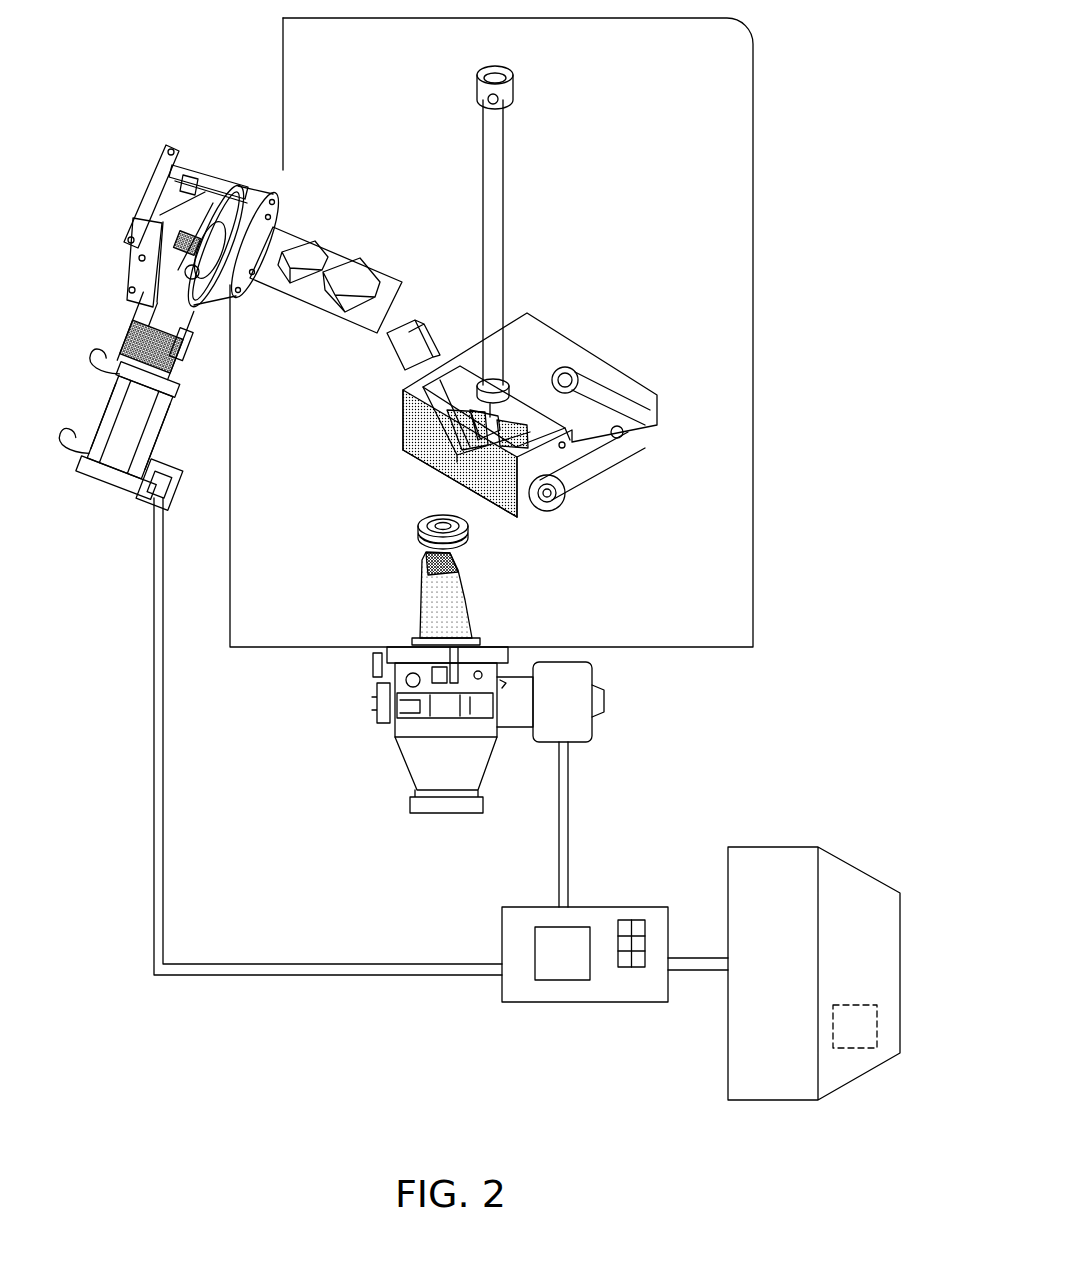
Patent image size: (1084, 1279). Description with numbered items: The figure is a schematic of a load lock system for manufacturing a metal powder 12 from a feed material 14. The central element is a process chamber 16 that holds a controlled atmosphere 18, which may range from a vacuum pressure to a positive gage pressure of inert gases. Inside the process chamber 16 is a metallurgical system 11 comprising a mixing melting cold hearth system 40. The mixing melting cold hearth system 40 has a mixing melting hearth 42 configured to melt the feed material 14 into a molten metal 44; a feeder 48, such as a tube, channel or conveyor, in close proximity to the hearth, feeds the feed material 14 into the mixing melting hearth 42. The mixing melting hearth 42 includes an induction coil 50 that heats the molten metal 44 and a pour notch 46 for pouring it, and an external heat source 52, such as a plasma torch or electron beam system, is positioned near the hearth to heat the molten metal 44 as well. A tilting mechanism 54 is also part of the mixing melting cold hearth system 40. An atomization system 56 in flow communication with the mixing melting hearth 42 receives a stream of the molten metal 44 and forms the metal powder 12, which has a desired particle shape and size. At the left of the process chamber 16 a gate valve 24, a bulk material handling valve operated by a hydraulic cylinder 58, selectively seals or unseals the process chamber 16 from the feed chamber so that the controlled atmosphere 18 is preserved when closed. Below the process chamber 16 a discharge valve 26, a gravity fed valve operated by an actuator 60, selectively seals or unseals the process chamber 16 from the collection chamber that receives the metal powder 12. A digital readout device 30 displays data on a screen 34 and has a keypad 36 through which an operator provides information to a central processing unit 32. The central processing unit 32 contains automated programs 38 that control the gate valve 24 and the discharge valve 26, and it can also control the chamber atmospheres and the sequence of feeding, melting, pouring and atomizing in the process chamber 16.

The metallurgical system 11 is at (352, 385).
The metal powder 12 is at (455, 596).
The feed material 14 is at (330, 245).
The process chamber 16 is at (753, 598).
The controlled atmosphere 18 is at (672, 216).
The gate valve 24 is at (168, 147).
The discharge valve 26 is at (403, 768).
The digital readout device 30 is at (585, 970).
The central processing unit (CPU) 32 is at (843, 999).
The screen 34 is at (553, 967).
The keypad 36 is at (625, 917).
The automated programs 38 is at (878, 1025).
The mixing melting cold hearth system 40 is at (516, 519).
The mixing melting hearth 42 is at (480, 445).
The molten metal 44 is at (565, 478).
The pour notch 46 is at (418, 430).
The feeder 48 is at (387, 270).
The induction coil 50 is at (410, 465).
The external heat source 52 is at (503, 157).
The tilting mechanism 54 is at (514, 415).
The atomization system 56 is at (418, 530).
The hydraulic cylinder 58 is at (98, 420).
The actuator 60 is at (583, 727).